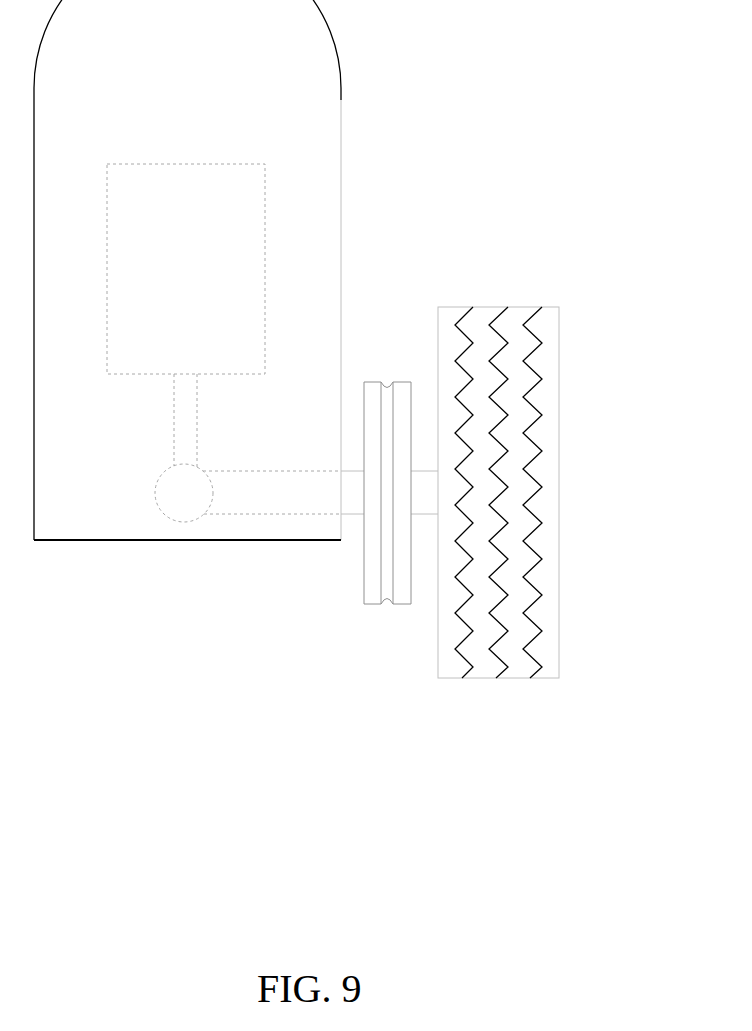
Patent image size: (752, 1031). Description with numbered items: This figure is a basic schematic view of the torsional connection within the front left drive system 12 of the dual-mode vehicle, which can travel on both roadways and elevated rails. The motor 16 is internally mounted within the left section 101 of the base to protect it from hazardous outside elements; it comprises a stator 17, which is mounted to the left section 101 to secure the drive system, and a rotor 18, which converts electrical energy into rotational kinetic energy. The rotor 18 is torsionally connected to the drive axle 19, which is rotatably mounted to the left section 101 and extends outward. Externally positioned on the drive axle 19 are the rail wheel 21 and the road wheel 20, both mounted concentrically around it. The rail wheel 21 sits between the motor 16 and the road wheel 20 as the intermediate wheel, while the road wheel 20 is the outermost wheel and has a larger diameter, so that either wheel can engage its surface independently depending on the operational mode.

The front left drive system 12 is at (372, 372).
The left section 101 is at (333, 100).
The motor 16 is at (197, 172).
The stator 17 is at (201, 312).
The rotor 18 is at (191, 440).
The drive axle 19 is at (259, 508).
The road wheel 20 is at (513, 674).
The rail wheel 21 is at (373, 596).